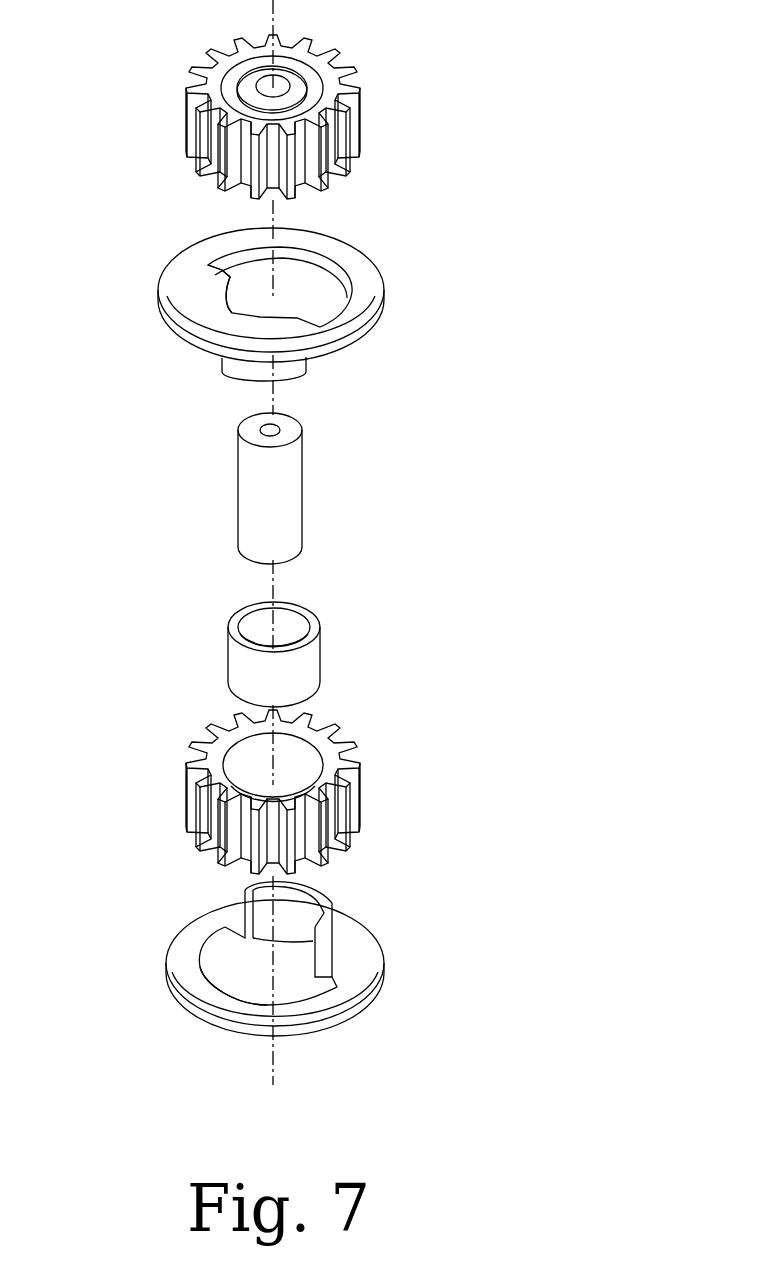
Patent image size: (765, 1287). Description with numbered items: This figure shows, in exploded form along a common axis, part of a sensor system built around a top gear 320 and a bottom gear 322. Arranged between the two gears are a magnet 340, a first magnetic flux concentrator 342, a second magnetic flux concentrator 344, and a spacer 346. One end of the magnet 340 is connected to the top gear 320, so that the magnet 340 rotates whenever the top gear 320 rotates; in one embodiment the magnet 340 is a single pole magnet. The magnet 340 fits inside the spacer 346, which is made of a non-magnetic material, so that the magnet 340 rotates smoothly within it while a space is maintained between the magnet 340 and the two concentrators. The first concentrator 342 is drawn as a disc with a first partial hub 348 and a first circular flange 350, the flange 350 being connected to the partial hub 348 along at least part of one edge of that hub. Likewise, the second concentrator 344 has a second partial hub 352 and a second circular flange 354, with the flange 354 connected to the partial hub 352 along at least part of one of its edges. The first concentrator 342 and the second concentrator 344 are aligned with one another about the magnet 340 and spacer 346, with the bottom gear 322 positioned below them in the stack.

The top gear 320 is at (362, 116).
The bottom gear 322 is at (362, 795).
The magnet 340 is at (303, 485).
The first magnetic flux concentrator 342 is at (422, 260).
The second magnetic flux concentrator 344 is at (428, 1018).
The spacer 346 is at (320, 650).
The first partial hub 348 is at (233, 375).
The first circular flange 350 is at (210, 248).
The second partial hub 352 is at (244, 897).
The second circular flange 354 is at (222, 998).